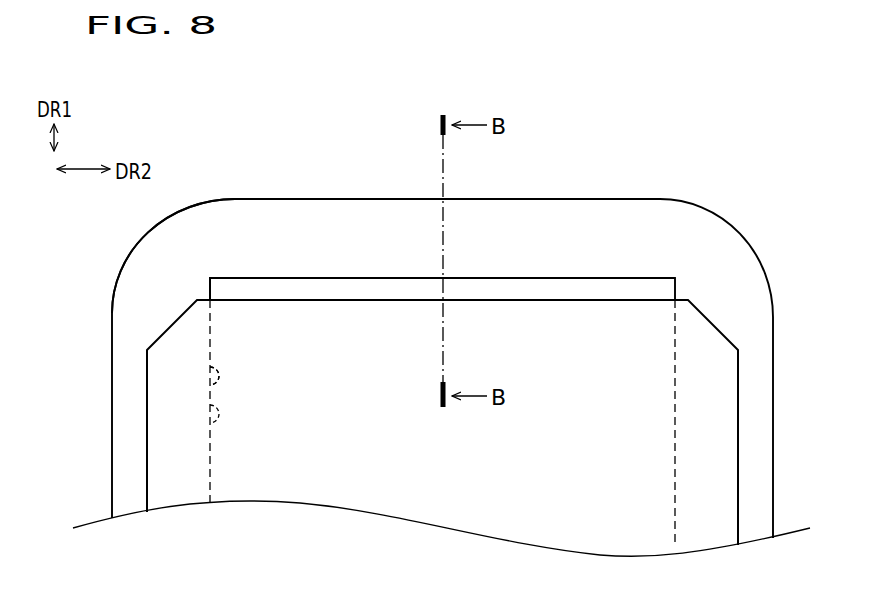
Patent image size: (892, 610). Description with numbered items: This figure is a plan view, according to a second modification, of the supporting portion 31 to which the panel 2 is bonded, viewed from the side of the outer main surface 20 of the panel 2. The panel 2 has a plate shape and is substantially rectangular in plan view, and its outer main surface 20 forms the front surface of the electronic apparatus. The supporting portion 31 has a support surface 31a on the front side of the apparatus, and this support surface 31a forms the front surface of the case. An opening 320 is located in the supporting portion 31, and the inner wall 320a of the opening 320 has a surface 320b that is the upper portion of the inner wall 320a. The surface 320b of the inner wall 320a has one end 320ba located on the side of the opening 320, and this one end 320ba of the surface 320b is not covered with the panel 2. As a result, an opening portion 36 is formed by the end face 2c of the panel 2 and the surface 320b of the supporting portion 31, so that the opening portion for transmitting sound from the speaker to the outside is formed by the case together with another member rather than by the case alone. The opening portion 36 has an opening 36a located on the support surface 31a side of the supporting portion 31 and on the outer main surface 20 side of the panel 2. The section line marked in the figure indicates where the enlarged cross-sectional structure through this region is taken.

The panel 2 is at (721, 414).
The outer main surface 20 is at (721, 478).
The end face 2c is at (256, 296).
The supporting portion 31 is at (708, 230).
The support surface 31a is at (122, 275).
The opening portion 36 is at (671, 291).
The opening 36a is at (493, 281).
The opening 320 is at (210, 423).
The inner wall 320a is at (210, 386).
The surface 320b is at (265, 281).
The one end 320ba is at (371, 278).